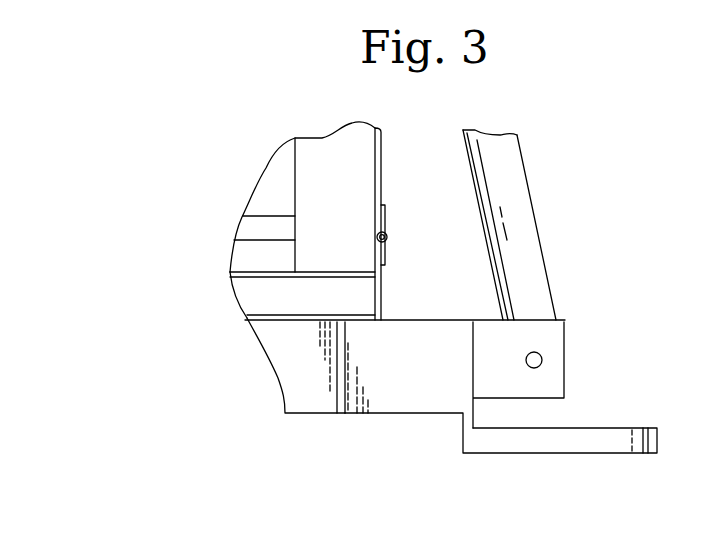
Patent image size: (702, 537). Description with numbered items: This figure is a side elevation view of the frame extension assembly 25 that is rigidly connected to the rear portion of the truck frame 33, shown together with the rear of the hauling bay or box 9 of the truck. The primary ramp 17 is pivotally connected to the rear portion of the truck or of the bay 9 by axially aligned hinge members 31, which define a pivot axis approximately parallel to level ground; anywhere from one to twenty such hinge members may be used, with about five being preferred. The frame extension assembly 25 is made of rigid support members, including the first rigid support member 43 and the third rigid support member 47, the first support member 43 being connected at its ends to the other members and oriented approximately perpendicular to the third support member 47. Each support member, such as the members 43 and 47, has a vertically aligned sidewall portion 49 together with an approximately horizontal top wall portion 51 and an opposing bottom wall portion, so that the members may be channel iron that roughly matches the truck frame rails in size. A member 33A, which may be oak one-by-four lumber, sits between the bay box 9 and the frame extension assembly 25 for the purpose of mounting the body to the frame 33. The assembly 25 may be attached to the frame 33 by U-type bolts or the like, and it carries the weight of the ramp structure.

The hauling bay or box 9 is at (275, 177).
The primary ramp 17 is at (383, 148).
The hinge member 31 is at (387, 235).
The truck frame 33 is at (260, 293).
The member 33A is at (224, 334).
The top wall portion 51 is at (430, 320).
The third rigid support member 47 is at (305, 387).
The frame extension assembly 25 is at (297, 431).
The sidewall portion 49 is at (400, 407).
The first rigid support member 43 is at (473, 382).